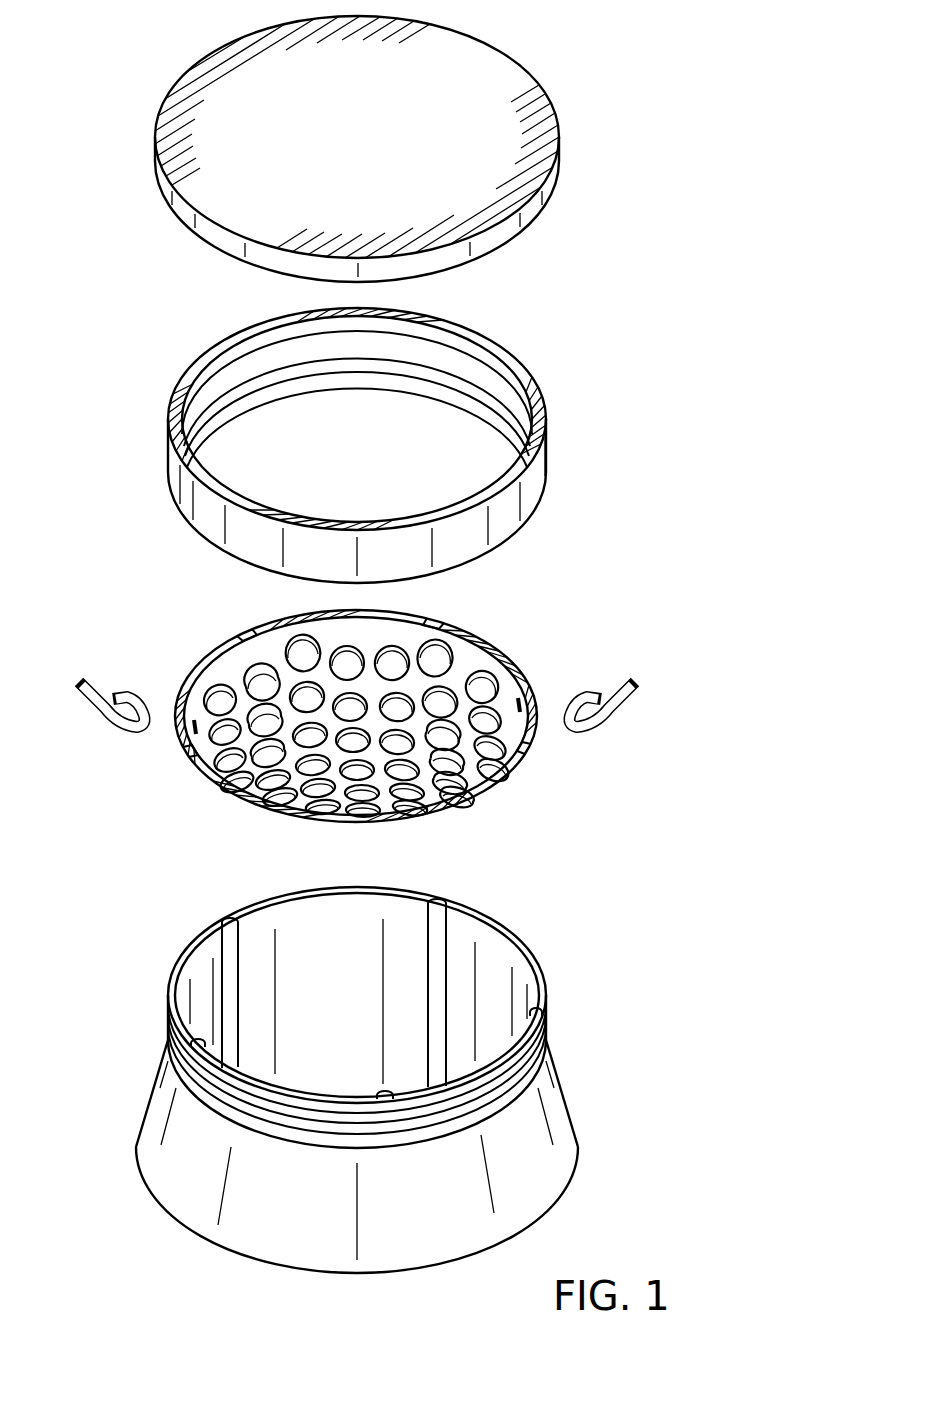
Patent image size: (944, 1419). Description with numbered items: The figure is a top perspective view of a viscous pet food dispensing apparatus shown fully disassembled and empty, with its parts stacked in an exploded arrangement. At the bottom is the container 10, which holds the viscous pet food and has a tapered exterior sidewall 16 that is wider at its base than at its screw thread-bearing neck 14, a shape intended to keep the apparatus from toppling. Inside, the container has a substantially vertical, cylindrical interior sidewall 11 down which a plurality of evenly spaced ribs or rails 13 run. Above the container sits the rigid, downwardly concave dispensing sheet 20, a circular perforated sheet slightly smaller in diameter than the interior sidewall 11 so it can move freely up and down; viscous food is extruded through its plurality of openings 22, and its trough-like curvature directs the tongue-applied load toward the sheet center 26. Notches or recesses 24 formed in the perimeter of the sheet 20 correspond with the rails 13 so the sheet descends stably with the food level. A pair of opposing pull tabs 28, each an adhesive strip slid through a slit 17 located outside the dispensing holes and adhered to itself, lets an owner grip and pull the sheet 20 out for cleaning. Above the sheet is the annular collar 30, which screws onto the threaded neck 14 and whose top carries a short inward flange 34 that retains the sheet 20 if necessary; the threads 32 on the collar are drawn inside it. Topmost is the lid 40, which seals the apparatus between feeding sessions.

The container 10 is at (344, 1080).
The interior sidewall 11 is at (366, 1057).
The ribs or rails 13 is at (443, 970).
The neck 14 is at (547, 1046).
The exterior sidewall 16 is at (432, 1218).
The slit 17 is at (168, 755).
The dispensing sheet 20 is at (347, 701).
The openings 22 is at (492, 676).
The notches or recesses 24 is at (272, 626).
The sheet center 26 is at (363, 755).
The pull tabs 28 is at (88, 683).
The collar 30 is at (348, 435).
The internal threads 32 is at (255, 372).
The inward flange 34 is at (527, 372).
The lid 40 is at (176, 60).